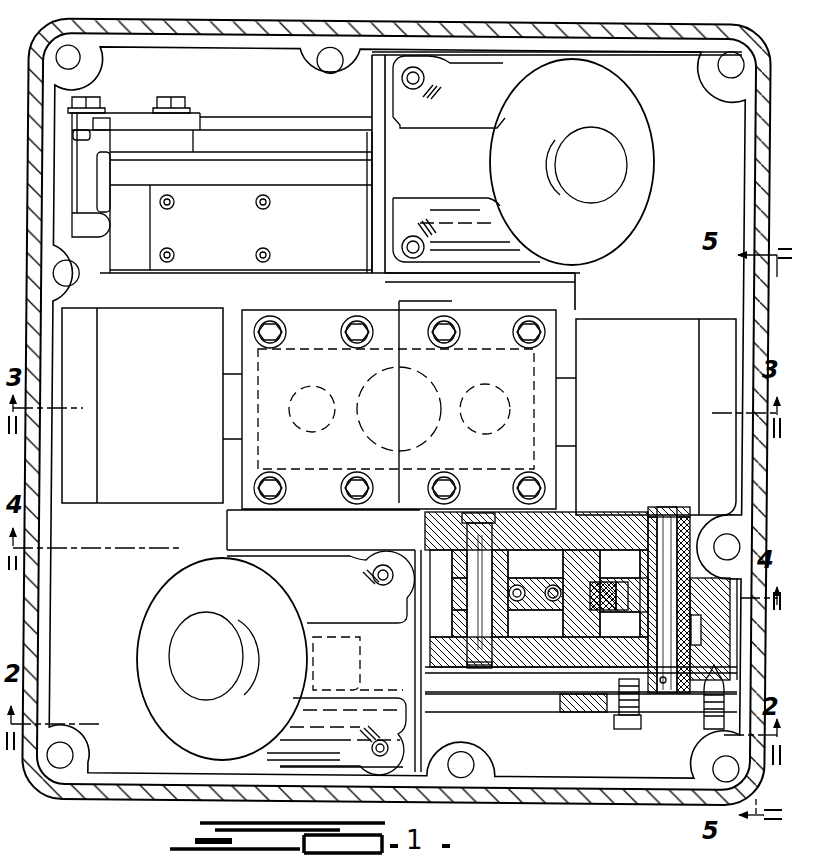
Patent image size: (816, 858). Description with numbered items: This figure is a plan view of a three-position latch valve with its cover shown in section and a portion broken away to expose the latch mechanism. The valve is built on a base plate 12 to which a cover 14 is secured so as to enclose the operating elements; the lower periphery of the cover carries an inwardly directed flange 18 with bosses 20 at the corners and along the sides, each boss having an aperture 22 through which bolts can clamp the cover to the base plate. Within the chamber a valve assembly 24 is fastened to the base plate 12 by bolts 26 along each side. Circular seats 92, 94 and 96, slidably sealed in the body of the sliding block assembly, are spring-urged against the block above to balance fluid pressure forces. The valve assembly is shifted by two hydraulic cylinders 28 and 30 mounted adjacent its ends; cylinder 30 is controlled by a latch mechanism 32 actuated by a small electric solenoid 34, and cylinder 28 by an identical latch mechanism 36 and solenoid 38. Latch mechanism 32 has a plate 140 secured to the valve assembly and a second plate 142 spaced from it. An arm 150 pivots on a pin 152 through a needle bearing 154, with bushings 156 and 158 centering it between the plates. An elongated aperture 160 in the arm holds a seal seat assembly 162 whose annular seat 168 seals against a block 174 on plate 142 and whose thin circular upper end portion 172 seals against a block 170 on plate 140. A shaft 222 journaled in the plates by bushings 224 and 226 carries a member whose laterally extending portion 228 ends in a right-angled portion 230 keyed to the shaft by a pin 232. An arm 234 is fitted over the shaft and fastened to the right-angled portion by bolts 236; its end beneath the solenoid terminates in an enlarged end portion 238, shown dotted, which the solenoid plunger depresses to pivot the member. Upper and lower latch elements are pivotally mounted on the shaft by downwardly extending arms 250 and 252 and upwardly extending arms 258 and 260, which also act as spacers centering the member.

The base plate 12 is at (712, 118).
The cover 14 is at (260, 22).
The inwardly directed flange 18 is at (192, 50).
The bosses 20 is at (96, 78).
The apertures 22 is at (72, 58).
The valve assembly 24 is at (326, 482).
The bolts 26 is at (352, 316).
The hydraulic cylinder 28 is at (148, 482).
The hydraulic cylinder 30 is at (648, 336).
The latch mechanism 32 is at (543, 670).
The electric solenoid 34 is at (202, 725).
The latch mechanism 36 is at (296, 180).
The solenoid 38 is at (485, 100).
The circular seat 92 is at (444, 390).
The circular seat 94 is at (328, 388).
The circular seat 96 is at (495, 388).
The plate 140 is at (345, 545).
The second plate 142 is at (490, 668).
The arm 150 is at (430, 566).
The pin 152 is at (480, 640).
The needle bearing 154 is at (450, 592).
The bushing 156 is at (514, 568).
The bushing 158 is at (514, 613).
The elongated aperture 160 is at (551, 542).
The seal seat assembly 162 is at (616, 546).
The annular projecting seat 168 is at (617, 628).
The block 170 is at (567, 522).
The circular upper end portion 172 is at (598, 590).
The block 174 is at (633, 656).
The shaft 222 is at (678, 595).
The bushing 224 is at (664, 533).
The bushing 226 is at (722, 657).
The laterally extending portion 228 is at (757, 607).
The right-angled portion 230 is at (710, 710).
The pin 232 is at (662, 700).
The arm 234 is at (528, 715).
The bolts 236 is at (614, 724).
The enlarged end portion 238 is at (362, 650).
The downwardly extending arm 250 is at (700, 530).
The downwardly extending arm 252 is at (722, 626).
The upwardly extending arm 258 is at (703, 491).
The upwardly extending arm 260 is at (713, 629).